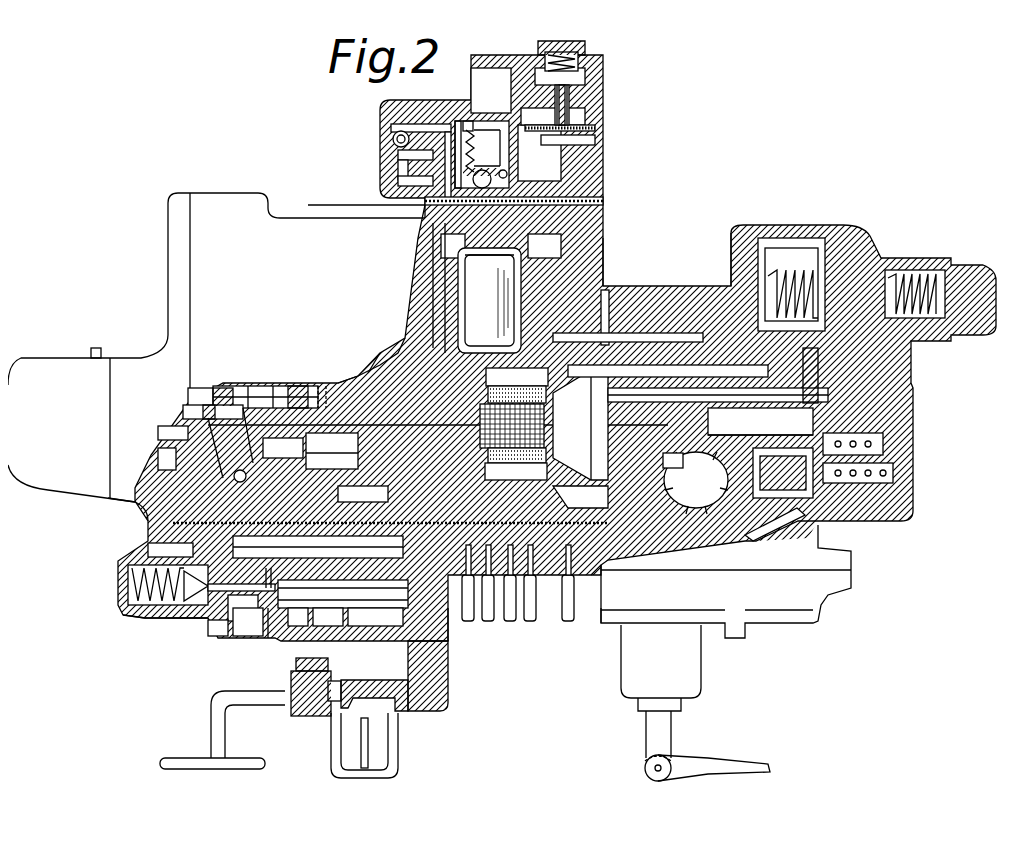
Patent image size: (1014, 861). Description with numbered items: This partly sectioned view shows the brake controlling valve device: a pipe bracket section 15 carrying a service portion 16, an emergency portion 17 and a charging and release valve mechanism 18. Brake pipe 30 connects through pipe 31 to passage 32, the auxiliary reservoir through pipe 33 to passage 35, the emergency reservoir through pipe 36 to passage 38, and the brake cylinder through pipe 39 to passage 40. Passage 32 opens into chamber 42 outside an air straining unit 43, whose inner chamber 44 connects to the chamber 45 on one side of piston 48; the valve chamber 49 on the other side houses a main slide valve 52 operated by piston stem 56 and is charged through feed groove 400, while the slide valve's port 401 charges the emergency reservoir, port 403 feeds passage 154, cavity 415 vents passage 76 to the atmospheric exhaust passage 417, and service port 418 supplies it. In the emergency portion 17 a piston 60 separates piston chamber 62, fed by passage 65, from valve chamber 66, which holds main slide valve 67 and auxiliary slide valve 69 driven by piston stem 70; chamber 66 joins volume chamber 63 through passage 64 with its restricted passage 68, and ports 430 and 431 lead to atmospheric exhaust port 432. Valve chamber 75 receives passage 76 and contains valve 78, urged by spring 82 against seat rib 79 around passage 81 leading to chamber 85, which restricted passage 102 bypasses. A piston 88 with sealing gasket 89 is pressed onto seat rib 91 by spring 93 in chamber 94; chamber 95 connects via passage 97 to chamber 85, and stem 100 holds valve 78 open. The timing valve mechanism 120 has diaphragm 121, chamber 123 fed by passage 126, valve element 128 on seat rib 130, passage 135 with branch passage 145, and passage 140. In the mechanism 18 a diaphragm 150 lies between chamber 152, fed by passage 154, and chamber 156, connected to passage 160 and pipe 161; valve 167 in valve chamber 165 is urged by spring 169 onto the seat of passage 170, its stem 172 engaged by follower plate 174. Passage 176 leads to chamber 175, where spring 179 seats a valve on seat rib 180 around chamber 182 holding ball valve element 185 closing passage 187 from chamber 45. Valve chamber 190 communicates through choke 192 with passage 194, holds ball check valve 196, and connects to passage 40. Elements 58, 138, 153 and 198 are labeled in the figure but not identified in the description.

The pipe bracket section 15 is at (597, 230).
The service portion 16 is at (722, 280).
The emergency portion 17 is at (274, 222).
The charging and release valve mechanism 18 is at (597, 148).
The brake pipe 30 is at (175, 750).
The pipe 31 is at (236, 700).
The passage 32 is at (478, 614).
The pipe 33 is at (562, 614).
The passage 35 is at (600, 570).
The pipe 36 is at (503, 614).
The passage 38 is at (538, 628).
The pipe 39 is at (482, 612).
The passage 40 is at (372, 190).
The chamber 42 is at (516, 464).
The air straining unit 43 is at (517, 382).
The chamber 44 is at (512, 426).
The chamber 45 is at (600, 410).
The piston 48 is at (660, 345).
The valve chamber 49 is at (740, 345).
The main slide valve 52 is at (696, 483).
The piston stem 56 is at (795, 364).
The chamber 58 is at (539, 153).
The piston 60 is at (345, 365).
The piston chamber 62 is at (378, 330).
The volume chamber 63 is at (432, 282).
The passage 64 is at (410, 335).
The passage 65 is at (487, 300).
The valve chamber 66 is at (290, 378).
The main slide valve 67 is at (320, 378).
The restricted passage 68 is at (368, 355).
The auxiliary slide valve 69 is at (200, 384).
The piston stem 70 is at (250, 378).
The valve chamber 75 is at (375, 612).
The passage 76 is at (762, 539).
The valve 78 is at (292, 612).
The seat rib 79 is at (262, 633).
The passage 81 is at (227, 632).
The spring 82 is at (330, 612).
The chamber 85 is at (198, 630).
The piston 88 is at (128, 610).
The sealing gasket 89 is at (132, 612).
The seat rib 91 is at (160, 612).
The spring 93 is at (118, 592).
The chamber 94 is at (120, 565).
The chamber 95 is at (122, 577).
The passage 97 is at (241, 578).
The stem 100 is at (239, 607).
The restricted passage 102 is at (340, 648).
The timing valve mechanism 120 is at (80, 500).
The diaphragm 121 is at (152, 445).
The chamber 123 is at (125, 500).
The passage 126 is at (150, 470).
The valve element 128 is at (160, 425).
The seat rib 130 is at (178, 427).
The passage 135 is at (363, 491).
The passage 138 is at (140, 543).
The passage 140 is at (318, 546).
The branch passage 145 is at (332, 455).
The diaphragm 150 is at (590, 120).
The chamber 152 is at (587, 133).
The sleeve 153 is at (760, 418).
The passage 154 is at (580, 168).
The chamber 156 is at (578, 106).
The passage 160 is at (596, 194).
The pipe 161 is at (562, 612).
The valve chamber 165 is at (527, 62).
The valve 167 is at (578, 44).
The spring 169 is at (533, 38).
The passage 170 is at (578, 70).
The stem 172 is at (542, 104).
The follower plate 174 is at (530, 104).
The chamber 175 is at (468, 120).
The passage 176 is at (473, 112).
The spring 179 is at (448, 118).
The seat rib 180 is at (474, 180).
The chamber 182 is at (506, 177).
The ball valve element 185 is at (484, 257).
The passage 187 is at (578, 262).
The valve chamber 190 is at (383, 118).
The choke 192 is at (390, 147).
The passage 194 is at (390, 174).
The ball valve element 196 is at (385, 130).
The passage 198 is at (460, 612).
The feed groove 400 is at (643, 320).
The port 401 is at (680, 458).
The port 403 is at (826, 352).
The cavity 415 is at (818, 513).
The atmospheric exhaust passage 417 is at (770, 562).
The service port 418 is at (885, 452).
The port 430 is at (215, 378).
The port 431 is at (282, 445).
The atmospheric exhaust port 432 is at (331, 448).